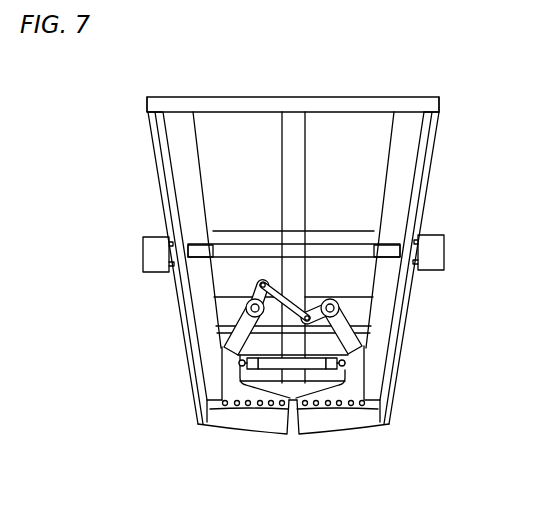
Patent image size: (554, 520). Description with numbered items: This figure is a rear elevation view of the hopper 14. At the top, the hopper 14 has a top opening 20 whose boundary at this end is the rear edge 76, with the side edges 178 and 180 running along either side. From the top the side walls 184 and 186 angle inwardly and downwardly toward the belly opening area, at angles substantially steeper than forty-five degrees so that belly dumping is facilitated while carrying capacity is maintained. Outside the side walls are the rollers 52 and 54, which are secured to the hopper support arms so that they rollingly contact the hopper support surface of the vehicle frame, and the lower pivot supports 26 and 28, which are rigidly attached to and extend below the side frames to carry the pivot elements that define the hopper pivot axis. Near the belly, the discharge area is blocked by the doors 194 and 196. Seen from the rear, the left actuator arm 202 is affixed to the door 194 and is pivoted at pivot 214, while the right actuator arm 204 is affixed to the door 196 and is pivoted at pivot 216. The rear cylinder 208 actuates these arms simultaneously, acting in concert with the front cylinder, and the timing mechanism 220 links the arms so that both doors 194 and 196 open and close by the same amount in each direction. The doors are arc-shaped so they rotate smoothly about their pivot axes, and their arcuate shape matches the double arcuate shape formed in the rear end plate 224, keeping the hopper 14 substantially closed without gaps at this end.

The hopper 14 is at (302, 264).
The top opening 20 is at (281, 98).
The rear edge 76 is at (336, 103).
The side edge 178 is at (150, 97).
The side edge 180 is at (425, 97).
The side wall 184 is at (160, 163).
The side wall 186 is at (432, 160).
The roller 52 is at (145, 248).
The roller 54 is at (444, 250).
The left lower pivot support 26 is at (200, 245).
The right lower pivot support 28 is at (386, 245).
The pivot 214 is at (249, 302).
The pivot 216 is at (343, 308).
The timing mechanism 220 is at (288, 300).
The rear cylinder 208 is at (350, 347).
The right actuator arm 204 is at (352, 373).
The left actuator arm 202 is at (223, 368).
The door 194 is at (255, 408).
The door 196 is at (338, 410).
The rear end plate 224 is at (297, 392).